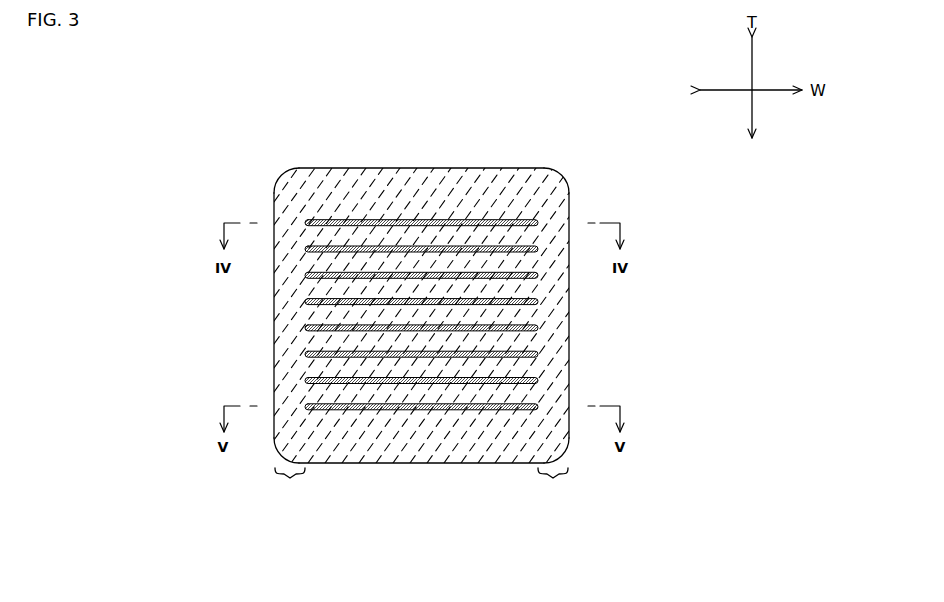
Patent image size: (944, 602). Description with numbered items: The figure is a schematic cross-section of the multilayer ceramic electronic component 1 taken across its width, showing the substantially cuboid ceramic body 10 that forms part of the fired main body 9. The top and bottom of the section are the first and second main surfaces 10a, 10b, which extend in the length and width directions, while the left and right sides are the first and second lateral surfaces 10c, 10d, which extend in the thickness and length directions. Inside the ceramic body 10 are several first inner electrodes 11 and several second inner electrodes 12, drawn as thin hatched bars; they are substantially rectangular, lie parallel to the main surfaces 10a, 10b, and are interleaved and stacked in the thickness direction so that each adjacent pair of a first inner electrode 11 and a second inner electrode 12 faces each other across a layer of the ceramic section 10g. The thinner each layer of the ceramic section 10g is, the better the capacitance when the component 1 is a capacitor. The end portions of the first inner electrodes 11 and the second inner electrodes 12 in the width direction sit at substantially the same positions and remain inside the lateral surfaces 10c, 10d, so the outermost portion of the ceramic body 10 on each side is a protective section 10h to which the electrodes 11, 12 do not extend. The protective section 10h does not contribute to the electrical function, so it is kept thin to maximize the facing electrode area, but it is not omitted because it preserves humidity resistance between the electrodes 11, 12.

The multilayer ceramic electronic component 1 is at (588, 147).
The main body 9 is at (547, 148).
The ceramic body 10 is at (502, 167).
The first main surface 10a is at (445, 168).
The second main surface 10b is at (417, 463).
The first lateral surface 10c is at (274, 322).
The second lateral surface 10d is at (569, 316).
The ceramic section 10g is at (490, 392).
The protective section 10h is at (424, 485).
The first inner electrode 11 is at (391, 218).
The second inner electrode 12 is at (373, 414).